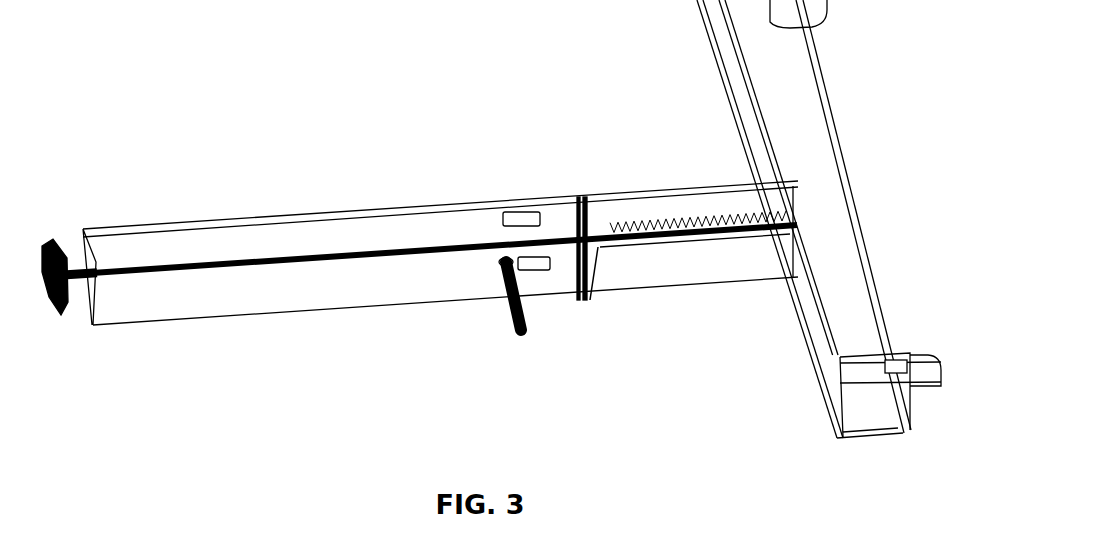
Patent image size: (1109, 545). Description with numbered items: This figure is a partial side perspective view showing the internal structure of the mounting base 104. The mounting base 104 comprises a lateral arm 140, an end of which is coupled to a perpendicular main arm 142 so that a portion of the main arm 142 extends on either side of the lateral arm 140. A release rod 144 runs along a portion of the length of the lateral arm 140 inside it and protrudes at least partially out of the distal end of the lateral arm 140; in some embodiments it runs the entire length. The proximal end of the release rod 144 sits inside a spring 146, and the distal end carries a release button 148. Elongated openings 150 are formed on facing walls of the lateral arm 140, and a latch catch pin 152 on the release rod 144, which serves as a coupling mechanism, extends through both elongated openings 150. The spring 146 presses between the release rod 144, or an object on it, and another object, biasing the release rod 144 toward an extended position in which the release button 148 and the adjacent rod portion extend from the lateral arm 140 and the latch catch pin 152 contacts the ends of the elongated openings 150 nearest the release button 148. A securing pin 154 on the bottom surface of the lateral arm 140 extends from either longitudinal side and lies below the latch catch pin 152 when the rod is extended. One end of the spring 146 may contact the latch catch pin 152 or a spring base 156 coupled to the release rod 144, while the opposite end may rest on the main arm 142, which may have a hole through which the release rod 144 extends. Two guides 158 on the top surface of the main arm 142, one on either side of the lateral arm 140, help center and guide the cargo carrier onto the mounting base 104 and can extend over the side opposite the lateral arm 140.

The mounting base 104 is at (254, 140).
The lateral arm 140 is at (678, 321).
The main arm 142 is at (712, 125).
The release rod 144 is at (391, 228).
The spring 146 is at (727, 260).
The release button 148 is at (57, 226).
The elongated openings 150 is at (538, 268).
The latch catch pin 152 is at (492, 279).
The securing pin 154 is at (523, 356).
The spring base 156 is at (591, 304).
The guides 158 is at (829, 44).